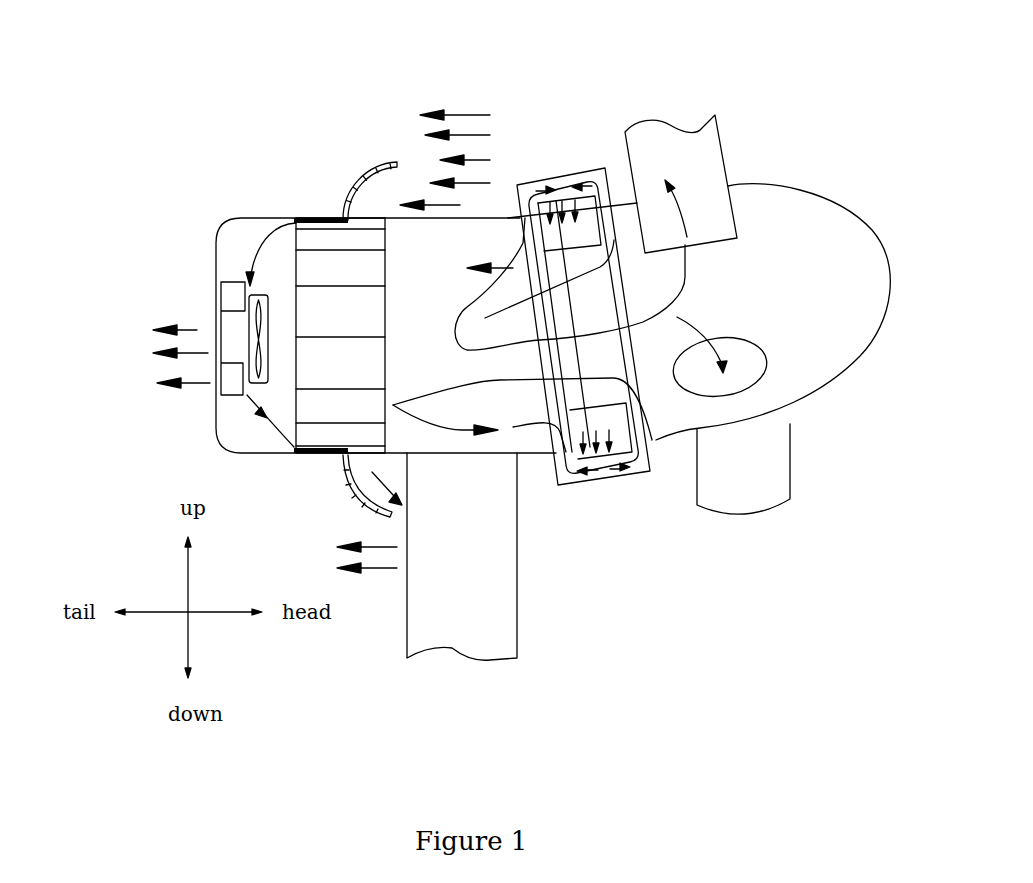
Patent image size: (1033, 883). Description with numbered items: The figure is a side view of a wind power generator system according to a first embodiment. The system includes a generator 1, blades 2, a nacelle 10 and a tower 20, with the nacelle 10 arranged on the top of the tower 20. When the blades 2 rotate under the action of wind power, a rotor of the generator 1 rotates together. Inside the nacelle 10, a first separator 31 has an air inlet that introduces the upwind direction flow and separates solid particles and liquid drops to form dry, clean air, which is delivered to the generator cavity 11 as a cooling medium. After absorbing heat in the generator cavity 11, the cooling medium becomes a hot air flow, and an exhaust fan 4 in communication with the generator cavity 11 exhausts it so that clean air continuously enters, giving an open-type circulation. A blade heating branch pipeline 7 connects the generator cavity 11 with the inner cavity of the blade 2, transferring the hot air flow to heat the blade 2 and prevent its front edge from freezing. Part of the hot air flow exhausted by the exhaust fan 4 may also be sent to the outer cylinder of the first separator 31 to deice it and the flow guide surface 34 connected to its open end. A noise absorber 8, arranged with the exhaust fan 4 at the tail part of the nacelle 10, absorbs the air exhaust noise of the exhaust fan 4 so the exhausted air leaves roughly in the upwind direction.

The generator 1 is at (607, 470).
The blades 2 is at (705, 158).
The exhaust fan 4 is at (232, 340).
The blade heating branch pipeline 7 is at (685, 278).
The noise absorber 8 is at (217, 325).
The nacelle 10 is at (247, 220).
The generator cavity 11 is at (637, 480).
The tower 20 is at (518, 497).
The first separator 31 is at (352, 303).
The flow guide surface 34 is at (380, 163).